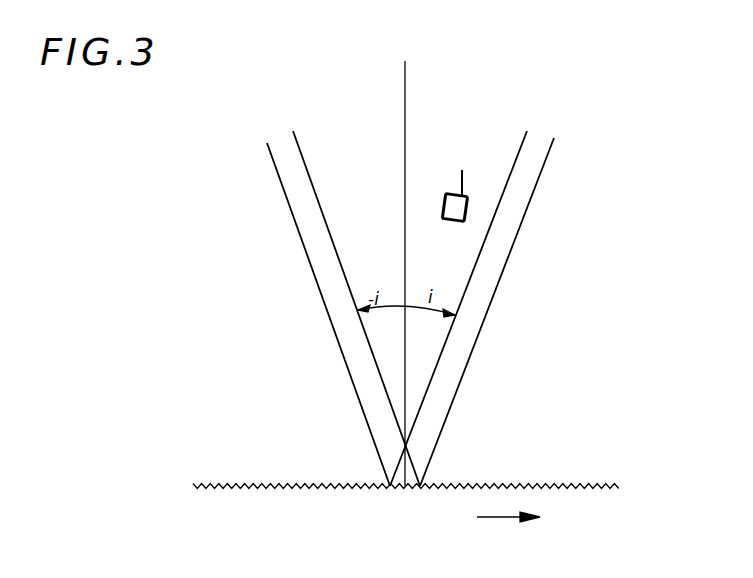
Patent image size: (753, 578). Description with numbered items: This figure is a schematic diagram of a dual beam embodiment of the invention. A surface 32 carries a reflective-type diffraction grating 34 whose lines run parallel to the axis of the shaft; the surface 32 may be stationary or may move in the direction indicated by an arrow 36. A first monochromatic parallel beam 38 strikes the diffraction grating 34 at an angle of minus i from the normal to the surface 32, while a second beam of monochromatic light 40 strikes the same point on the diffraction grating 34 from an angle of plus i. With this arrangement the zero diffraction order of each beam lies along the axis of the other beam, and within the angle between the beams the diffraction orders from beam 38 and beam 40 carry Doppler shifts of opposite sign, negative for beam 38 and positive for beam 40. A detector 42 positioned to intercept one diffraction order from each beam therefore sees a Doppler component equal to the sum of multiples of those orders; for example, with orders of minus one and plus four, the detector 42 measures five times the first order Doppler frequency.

The surface 32 is at (537, 482).
The diffraction grating 34 is at (455, 482).
The arrow 36 is at (485, 518).
The first monochromatic parallel beam 38 is at (307, 254).
The second beam of monochromatic light 40 is at (510, 242).
The detector 42 is at (447, 200).